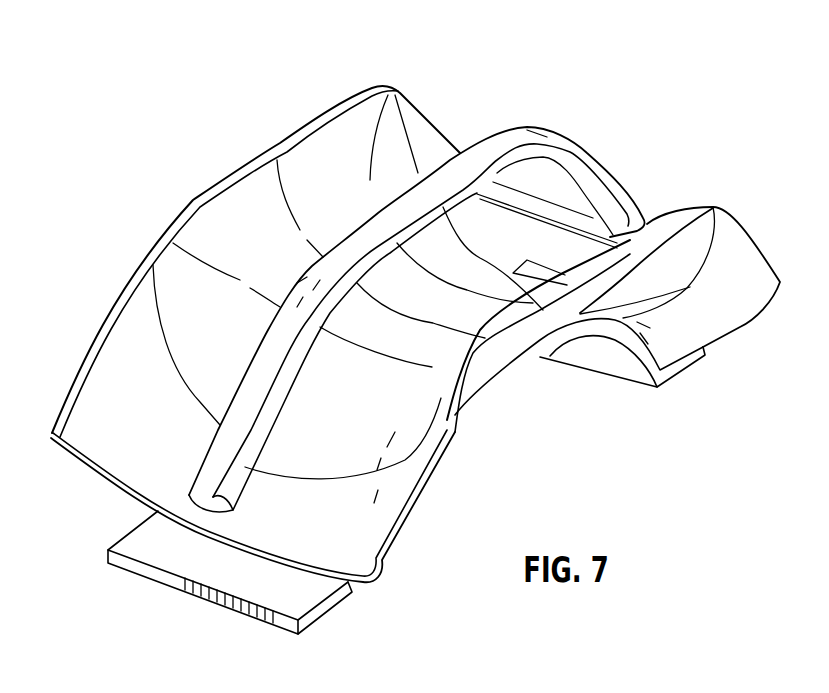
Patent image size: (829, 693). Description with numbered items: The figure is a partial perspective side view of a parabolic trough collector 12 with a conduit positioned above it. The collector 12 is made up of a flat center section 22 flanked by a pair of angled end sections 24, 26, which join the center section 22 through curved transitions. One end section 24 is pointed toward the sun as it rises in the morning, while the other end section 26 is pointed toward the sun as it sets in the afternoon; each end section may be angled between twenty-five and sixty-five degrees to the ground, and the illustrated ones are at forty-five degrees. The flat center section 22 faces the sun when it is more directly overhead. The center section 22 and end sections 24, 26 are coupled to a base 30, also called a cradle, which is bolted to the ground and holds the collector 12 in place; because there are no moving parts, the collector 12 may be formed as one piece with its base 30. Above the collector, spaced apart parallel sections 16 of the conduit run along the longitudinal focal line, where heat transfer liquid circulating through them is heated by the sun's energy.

The parabolic trough collector 12 is at (163, 103).
The parallel sections 16 is at (360, 242).
The center section 22 is at (242, 218).
The angled end section 24 is at (107, 400).
The angled end section 26 is at (435, 141).
The base 30 is at (338, 610).